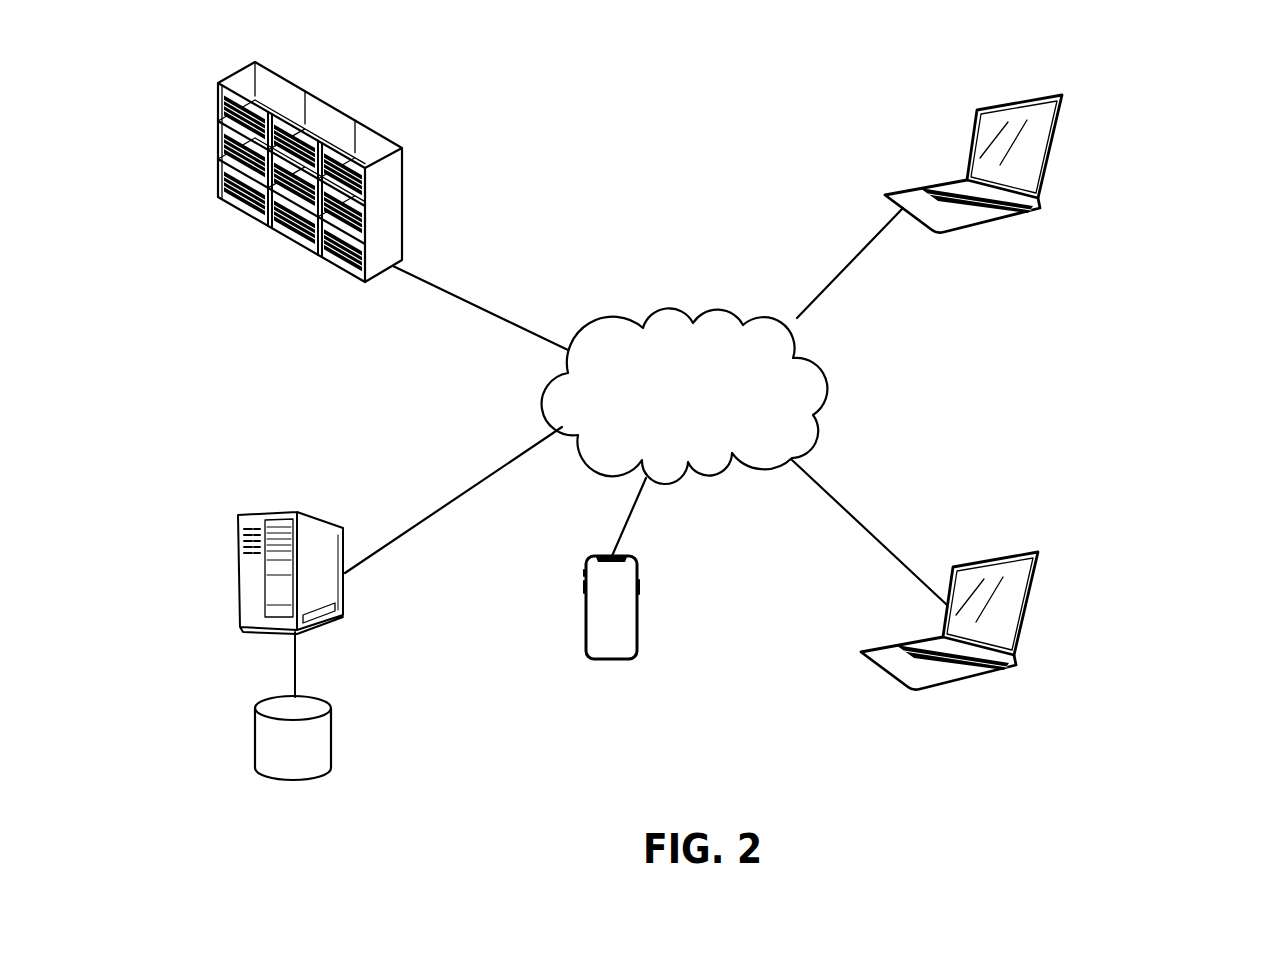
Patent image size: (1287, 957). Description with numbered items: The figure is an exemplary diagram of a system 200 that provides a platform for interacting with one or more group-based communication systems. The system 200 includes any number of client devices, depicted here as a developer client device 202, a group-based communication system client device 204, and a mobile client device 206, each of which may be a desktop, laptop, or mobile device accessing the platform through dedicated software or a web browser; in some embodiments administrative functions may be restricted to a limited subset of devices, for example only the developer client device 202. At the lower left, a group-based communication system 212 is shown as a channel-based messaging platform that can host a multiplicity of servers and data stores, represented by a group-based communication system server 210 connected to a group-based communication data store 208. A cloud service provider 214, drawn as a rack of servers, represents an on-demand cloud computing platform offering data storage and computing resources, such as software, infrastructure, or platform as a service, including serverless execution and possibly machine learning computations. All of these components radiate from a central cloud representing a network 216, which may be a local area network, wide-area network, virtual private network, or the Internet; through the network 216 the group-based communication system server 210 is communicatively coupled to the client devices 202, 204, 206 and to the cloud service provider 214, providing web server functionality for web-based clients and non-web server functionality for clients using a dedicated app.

The system 200 is at (1145, 93).
The developer client device 202 is at (1052, 167).
The group-based communication system client device 204 is at (1028, 624).
The mobile client device 206 is at (610, 661).
The group-based communication data store 208 is at (334, 731).
The group-based communication system server 210 is at (322, 515).
The group-based communication system 212 is at (294, 664).
The cloud service provider 214 is at (338, 112).
The network 216 is at (822, 350).